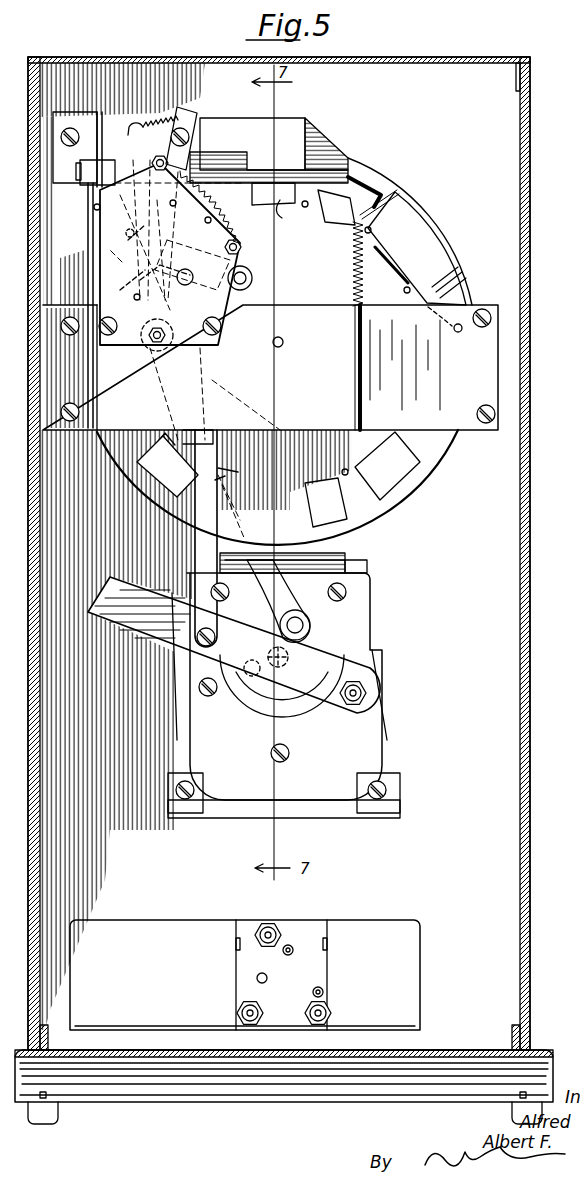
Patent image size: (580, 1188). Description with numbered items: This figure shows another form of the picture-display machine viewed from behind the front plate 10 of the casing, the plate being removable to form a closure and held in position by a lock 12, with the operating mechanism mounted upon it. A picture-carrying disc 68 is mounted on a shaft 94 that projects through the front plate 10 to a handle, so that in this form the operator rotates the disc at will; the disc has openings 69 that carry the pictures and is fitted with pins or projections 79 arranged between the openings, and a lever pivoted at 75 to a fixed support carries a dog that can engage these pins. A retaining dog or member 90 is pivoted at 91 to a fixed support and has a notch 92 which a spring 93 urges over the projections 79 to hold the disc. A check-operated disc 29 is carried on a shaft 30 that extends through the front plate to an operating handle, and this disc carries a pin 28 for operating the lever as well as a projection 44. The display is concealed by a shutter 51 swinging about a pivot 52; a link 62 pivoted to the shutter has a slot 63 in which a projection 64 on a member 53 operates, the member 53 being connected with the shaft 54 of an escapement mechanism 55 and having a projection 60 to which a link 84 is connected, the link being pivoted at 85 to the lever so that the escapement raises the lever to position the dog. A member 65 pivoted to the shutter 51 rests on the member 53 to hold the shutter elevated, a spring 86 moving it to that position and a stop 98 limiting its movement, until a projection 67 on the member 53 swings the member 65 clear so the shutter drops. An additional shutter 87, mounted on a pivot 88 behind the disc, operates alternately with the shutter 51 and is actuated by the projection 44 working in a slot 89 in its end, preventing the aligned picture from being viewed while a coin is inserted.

The front plate 10 is at (512, 158).
The lock 12 is at (236, 978).
The pin or projection 28 is at (285, 668).
The disc 29 is at (268, 692).
The shaft 30 is at (288, 660).
The projection 44 is at (335, 640).
The shutter 51 is at (305, 136).
The pivot 52 is at (72, 132).
The member 53 is at (166, 288).
The shaft 54 is at (229, 283).
The escapement mechanism 55 is at (100, 217).
The projection or extension 60 is at (241, 250).
The link 62 is at (122, 243).
The slot 63 is at (142, 342).
The projection 64 is at (122, 281).
The member 65 is at (153, 160).
The projection 67 is at (187, 300).
The disc 68 is at (380, 178).
The openings 69 is at (284, 210).
The pivot 75 is at (350, 705).
The pins or projections 79 is at (403, 290).
The link 84 is at (212, 383).
The pivot connection 85 is at (190, 648).
The spring 86 is at (172, 118).
The additional shutter 87 is at (237, 166).
The pivot 88 is at (222, 476).
The slot 89 is at (268, 572).
The retaining dog or member 90 is at (398, 192).
The pivot 91 is at (456, 332).
The notch 92 is at (371, 229).
The spring 93 is at (353, 262).
The shaft 94 is at (275, 338).
The stop 98 is at (140, 120).